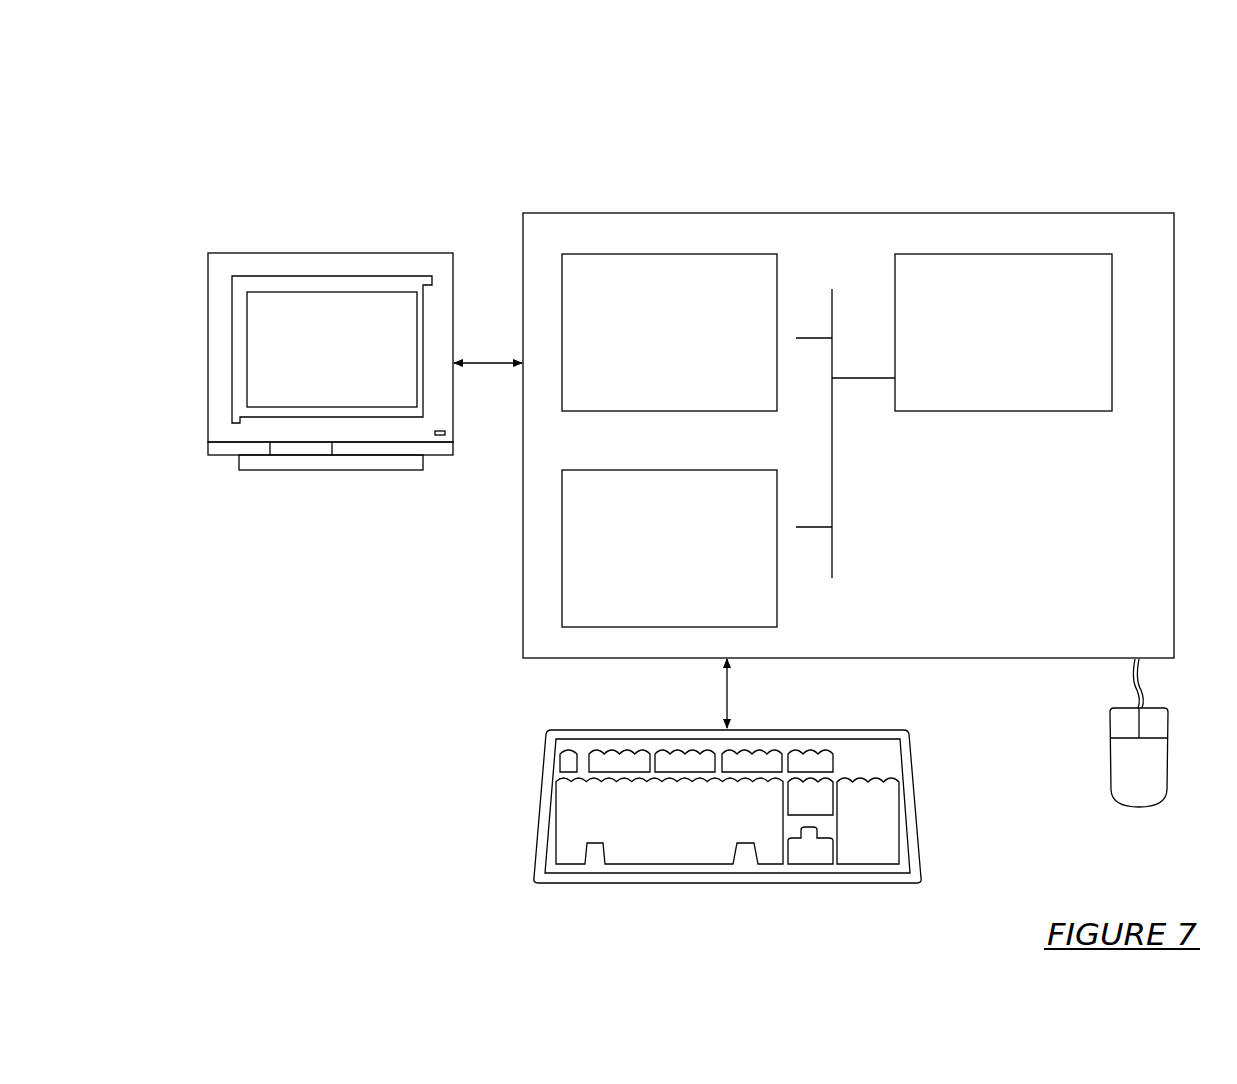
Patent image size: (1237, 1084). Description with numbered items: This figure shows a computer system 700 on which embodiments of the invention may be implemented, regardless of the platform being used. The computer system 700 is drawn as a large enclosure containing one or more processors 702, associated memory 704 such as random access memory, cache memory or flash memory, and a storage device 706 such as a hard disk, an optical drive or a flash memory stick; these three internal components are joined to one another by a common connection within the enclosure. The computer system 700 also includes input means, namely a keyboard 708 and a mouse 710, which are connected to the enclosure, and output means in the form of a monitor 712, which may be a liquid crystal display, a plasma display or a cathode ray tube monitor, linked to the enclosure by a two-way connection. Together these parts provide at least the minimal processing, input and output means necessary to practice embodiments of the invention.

The computer system 700 is at (1052, 93).
The processor 702 is at (1003, 332).
The memory 704 is at (669, 332).
The storage device 706 is at (669, 548).
The keyboard 708 is at (727, 771).
The mouse 710 is at (1139, 733).
The monitor 712 is at (330, 361).